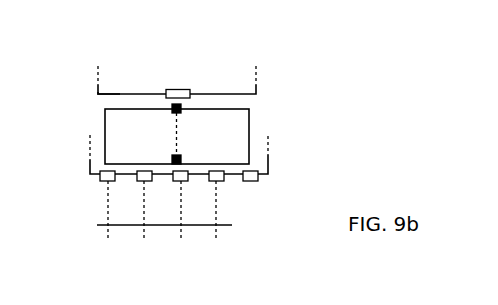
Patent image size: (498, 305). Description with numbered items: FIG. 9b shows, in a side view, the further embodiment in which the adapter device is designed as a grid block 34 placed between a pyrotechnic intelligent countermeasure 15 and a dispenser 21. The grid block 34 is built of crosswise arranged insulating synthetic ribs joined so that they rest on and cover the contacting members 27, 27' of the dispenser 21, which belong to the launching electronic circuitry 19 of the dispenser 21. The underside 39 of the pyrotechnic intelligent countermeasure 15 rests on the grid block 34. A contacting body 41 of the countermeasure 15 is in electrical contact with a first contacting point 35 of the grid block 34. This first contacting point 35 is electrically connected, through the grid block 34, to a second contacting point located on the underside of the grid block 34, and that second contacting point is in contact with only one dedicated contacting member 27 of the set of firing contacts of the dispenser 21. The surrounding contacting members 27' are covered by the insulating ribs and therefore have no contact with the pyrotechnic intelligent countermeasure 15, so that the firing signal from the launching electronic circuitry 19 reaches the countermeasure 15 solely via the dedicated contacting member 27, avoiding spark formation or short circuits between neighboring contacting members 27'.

The pyrotechnic intelligent countermeasure 15 is at (97, 87).
The underside 39 is at (108, 98).
The contacting body 41 is at (186, 88).
The grid block 34 is at (249, 122).
The first contacting point 35 is at (172, 108).
The dispenser 21 is at (270, 162).
The surrounding contacting members 27' is at (150, 202).
The dedicated contacting member 27 is at (177, 225).
The launching electronic circuitry 19 is at (131, 228).